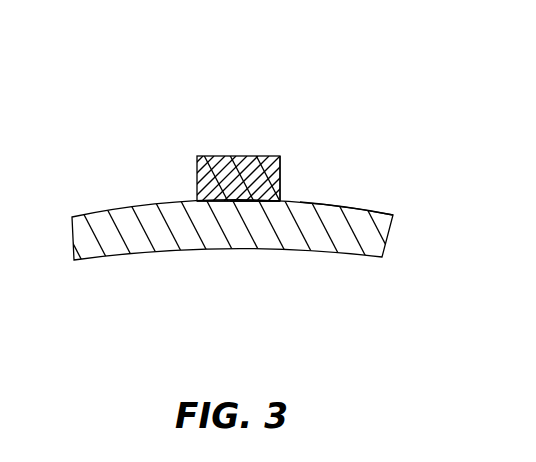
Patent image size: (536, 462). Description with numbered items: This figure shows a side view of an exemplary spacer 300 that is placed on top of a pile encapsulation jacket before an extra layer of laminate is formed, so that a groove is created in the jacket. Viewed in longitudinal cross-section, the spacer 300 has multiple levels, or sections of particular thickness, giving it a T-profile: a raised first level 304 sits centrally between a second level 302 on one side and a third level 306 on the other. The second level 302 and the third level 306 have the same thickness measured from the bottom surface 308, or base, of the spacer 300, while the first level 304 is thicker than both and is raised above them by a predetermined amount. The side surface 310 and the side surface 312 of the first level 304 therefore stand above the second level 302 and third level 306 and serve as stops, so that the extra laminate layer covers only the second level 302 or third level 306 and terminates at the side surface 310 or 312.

The spacer 300 is at (452, 119).
The second level 302 is at (133, 255).
The first level 304 is at (230, 180).
The third level 306 is at (338, 232).
The bottom surface 308 is at (258, 203).
The side surface 310 is at (196, 171).
The side surface 312 is at (282, 165).